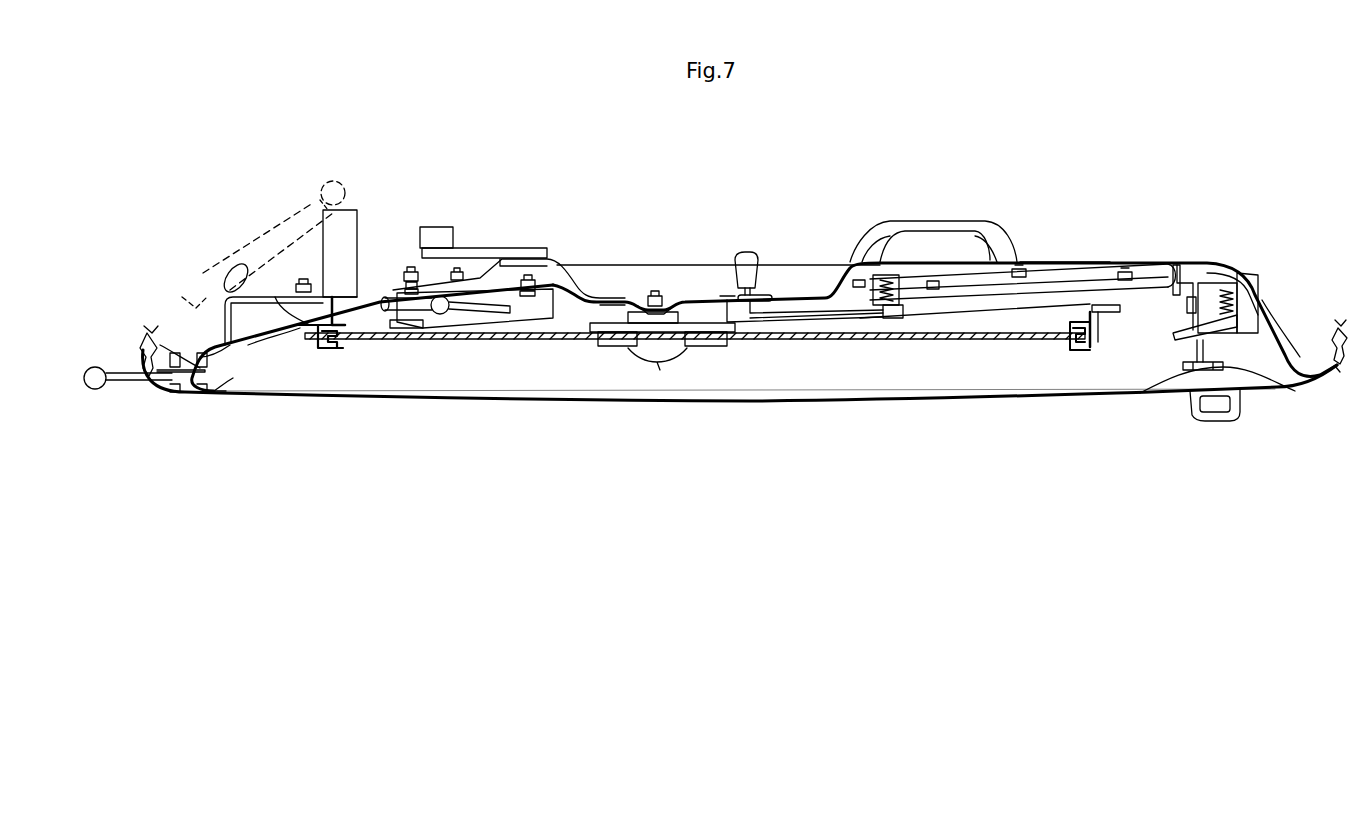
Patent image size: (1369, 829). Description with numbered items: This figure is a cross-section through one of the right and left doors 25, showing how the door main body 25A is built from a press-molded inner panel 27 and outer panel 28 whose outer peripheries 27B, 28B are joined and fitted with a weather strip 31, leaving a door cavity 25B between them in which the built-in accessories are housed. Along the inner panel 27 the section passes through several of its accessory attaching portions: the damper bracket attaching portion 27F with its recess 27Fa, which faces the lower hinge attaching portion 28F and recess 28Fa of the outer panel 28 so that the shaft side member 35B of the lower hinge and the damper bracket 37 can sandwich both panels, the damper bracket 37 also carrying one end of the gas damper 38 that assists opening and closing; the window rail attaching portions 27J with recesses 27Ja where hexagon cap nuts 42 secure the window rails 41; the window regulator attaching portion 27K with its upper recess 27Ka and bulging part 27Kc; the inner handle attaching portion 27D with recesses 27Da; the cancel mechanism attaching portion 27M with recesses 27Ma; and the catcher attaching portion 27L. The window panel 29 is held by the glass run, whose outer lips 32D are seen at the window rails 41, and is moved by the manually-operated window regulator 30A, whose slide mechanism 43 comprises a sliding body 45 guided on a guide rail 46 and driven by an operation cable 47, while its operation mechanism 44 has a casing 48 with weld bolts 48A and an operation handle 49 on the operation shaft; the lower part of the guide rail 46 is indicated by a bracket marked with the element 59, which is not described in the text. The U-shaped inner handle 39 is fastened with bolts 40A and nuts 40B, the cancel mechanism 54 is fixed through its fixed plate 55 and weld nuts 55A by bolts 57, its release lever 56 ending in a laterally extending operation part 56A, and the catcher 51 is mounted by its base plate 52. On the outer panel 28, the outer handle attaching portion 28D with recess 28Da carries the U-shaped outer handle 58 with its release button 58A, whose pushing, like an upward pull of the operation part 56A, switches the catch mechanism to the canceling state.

The door 25 is at (922, 478).
The door main body 25A is at (852, 402).
The door cavity 25B is at (798, 402).
The inner panel 27 is at (775, 263).
The outer periphery of inner panel 27B is at (190, 350).
The inner handle attaching portion 27D is at (1050, 262).
The recess of inner handle attaching portion 27Da is at (850, 262).
The damper bracket attaching portion 27F is at (250, 354).
The recess of damper bracket attaching portion 27Fa is at (235, 374).
The window rail attaching portion 27J is at (312, 350).
The recess of window rail attaching portion 27Ja is at (315, 300).
The window regulator attaching portion 27K is at (622, 290).
The upper recess 27Ka is at (625, 303).
The bulging part 27Kc is at (487, 278).
The catcher attaching portion 27L is at (1245, 268).
The cancel mechanism attaching portion 27M is at (1113, 262).
The recess of cancel mechanism attaching portion 27Ma is at (985, 258).
The outer panel 28 is at (630, 402).
The outer periphery of outer panel 28B is at (185, 392).
The outer handle attaching portion 28D is at (1270, 397).
The recess of outer handle attaching portion 28Da is at (1238, 392).
The lower hinge attaching portion 28F is at (228, 402).
The recess of lower hinge attaching portion 28Fa is at (214, 393).
The window panel 29 is at (1003, 341).
The manually-operated window regulator 30A is at (710, 318).
The weather strip 31 is at (1338, 326).
The outer lip 32D is at (342, 350).
The shaft side member of lower hinge 35B is at (132, 372).
The damper bracket 37 is at (244, 283).
The gas damper 38 is at (305, 247).
The inner handle 39 is at (890, 222).
The bolt 40A is at (875, 302).
The nut 40B is at (892, 308).
The window rail 41 is at (343, 296).
The hexagon cap nut 42 is at (410, 271).
The slide mechanism 43 is at (608, 308).
The operation mechanism 44 is at (485, 247).
The sliding body 45 is at (752, 326).
The guide rail 46 is at (630, 342).
The operation cable 47 is at (485, 310).
The casing 48 is at (530, 320).
The weld bolt 48A is at (528, 297).
The operation handle 49 is at (420, 232).
The catcher 51 is at (1218, 283).
The base plate 52 is at (1255, 329).
The cancel mechanism 54 is at (955, 322).
The fixed plate 55 is at (1085, 270).
The weld nut 55A is at (1012, 270).
The release lever 56 is at (812, 300).
The operation part 56A is at (758, 270).
The bolt 57 is at (898, 320).
The outer handle 58 is at (1217, 422).
The release button 58A is at (1208, 421).
The support bracket 59 is at (657, 374).